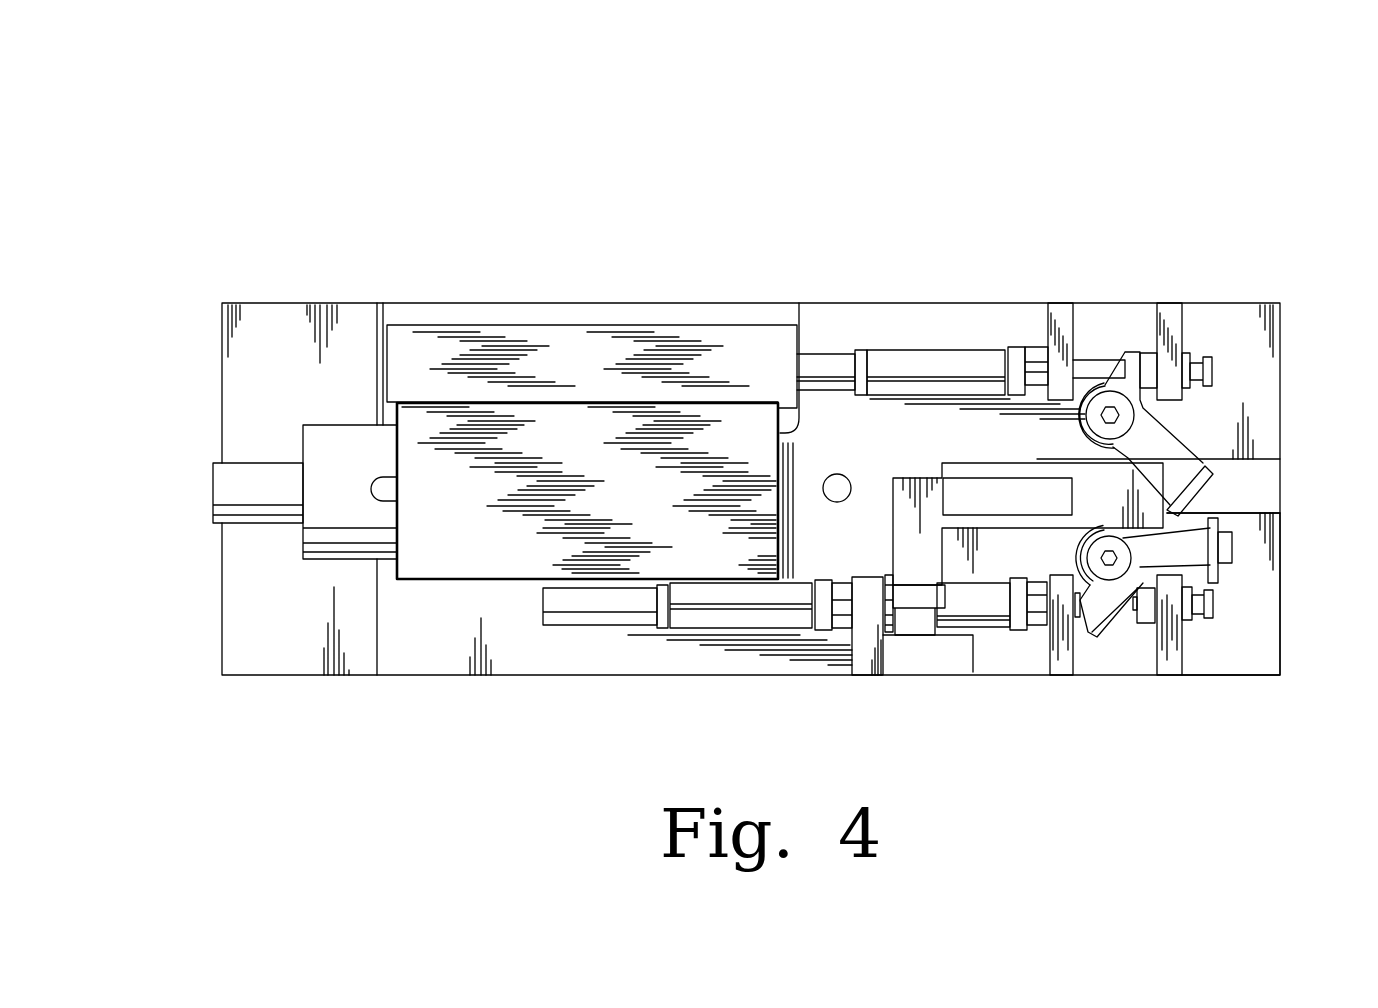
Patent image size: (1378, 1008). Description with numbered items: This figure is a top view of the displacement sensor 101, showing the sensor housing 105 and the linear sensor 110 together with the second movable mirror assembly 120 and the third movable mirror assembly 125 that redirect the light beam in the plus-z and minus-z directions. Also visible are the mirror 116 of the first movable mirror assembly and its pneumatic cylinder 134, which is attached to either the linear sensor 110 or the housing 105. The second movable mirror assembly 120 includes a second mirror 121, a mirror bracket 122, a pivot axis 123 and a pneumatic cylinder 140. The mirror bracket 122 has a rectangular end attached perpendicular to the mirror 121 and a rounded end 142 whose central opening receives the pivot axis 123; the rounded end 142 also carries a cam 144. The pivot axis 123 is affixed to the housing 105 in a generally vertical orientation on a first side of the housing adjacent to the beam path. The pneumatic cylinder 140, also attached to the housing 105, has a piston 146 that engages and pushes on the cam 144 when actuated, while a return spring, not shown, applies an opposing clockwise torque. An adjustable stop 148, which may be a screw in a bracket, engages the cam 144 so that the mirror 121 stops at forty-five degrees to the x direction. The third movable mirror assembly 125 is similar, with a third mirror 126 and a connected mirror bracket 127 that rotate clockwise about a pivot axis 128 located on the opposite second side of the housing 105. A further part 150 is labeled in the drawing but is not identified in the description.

The displacement sensor 101 is at (165, 150).
The sensor housing 105 is at (455, 310).
The linear sensor 110 is at (447, 567).
The mirror 116 is at (983, 462).
The second movable mirror assembly 120 is at (1294, 638).
The second mirror 121 is at (1207, 618).
The mirror bracket 122 is at (1233, 562).
The pivot axis 123 is at (1107, 567).
The third movable mirror assembly 125 is at (1173, 260).
The third mirror 126 is at (1202, 460).
The mirror bracket 127 is at (1210, 488).
The pivot axis 128 is at (1106, 405).
The pneumatic cylinder 134 is at (708, 626).
The pneumatic cylinder 140 is at (1010, 640).
The rounded end 142 is at (1082, 556).
The cam 144 is at (1100, 636).
The piston 146 is at (1085, 640).
The adjustable stop 148 is at (1207, 625).
The right support post 150 is at (1181, 672).